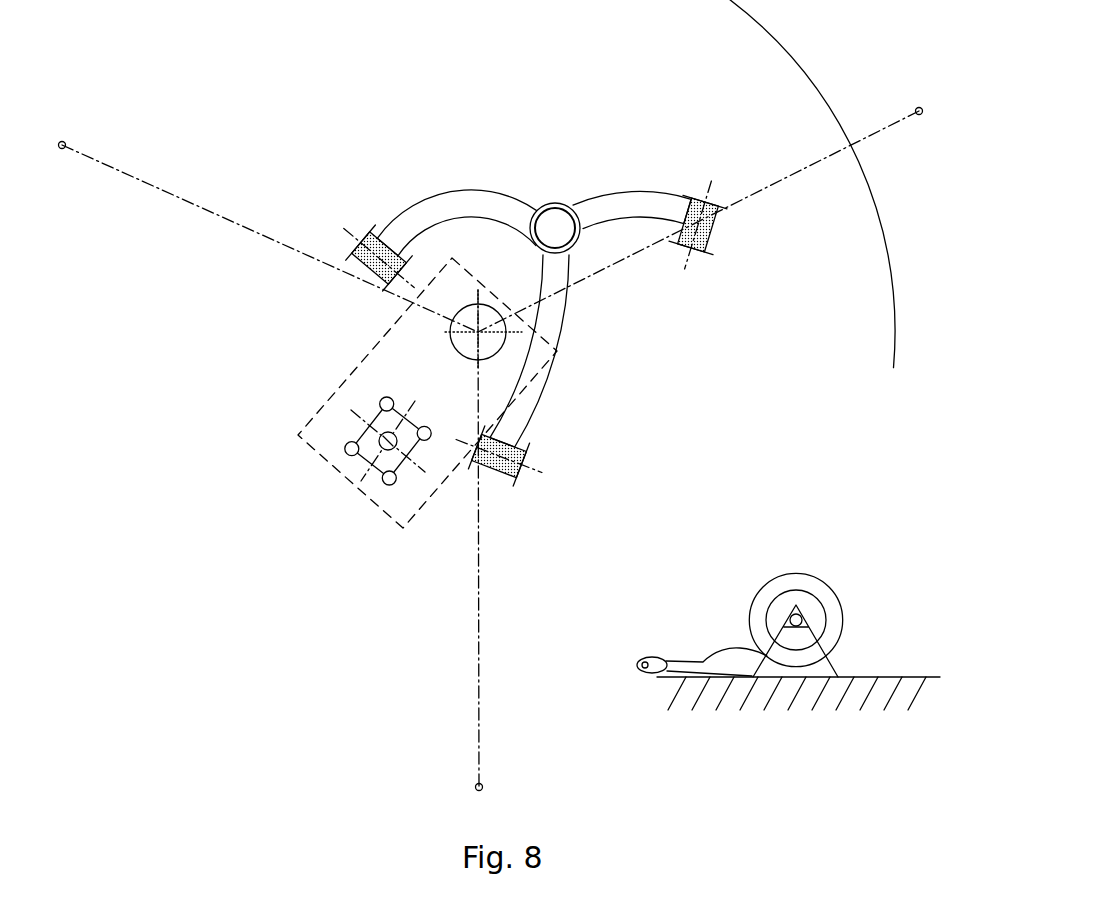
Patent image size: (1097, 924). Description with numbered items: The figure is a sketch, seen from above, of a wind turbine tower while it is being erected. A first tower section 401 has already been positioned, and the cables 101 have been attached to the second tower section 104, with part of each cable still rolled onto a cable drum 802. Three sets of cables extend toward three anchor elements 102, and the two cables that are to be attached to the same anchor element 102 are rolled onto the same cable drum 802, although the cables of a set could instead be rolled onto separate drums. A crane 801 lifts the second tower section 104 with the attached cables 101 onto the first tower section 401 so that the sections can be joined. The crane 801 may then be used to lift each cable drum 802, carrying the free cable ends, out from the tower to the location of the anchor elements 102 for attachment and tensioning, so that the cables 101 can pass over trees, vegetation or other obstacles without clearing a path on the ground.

The cables 101 is at (487, 214).
The anchor element 102 is at (63, 142).
The second tower section 104 is at (552, 213).
The first tower section 401 is at (455, 335).
The crane 801 is at (362, 457).
The cable drum 802 is at (356, 266).